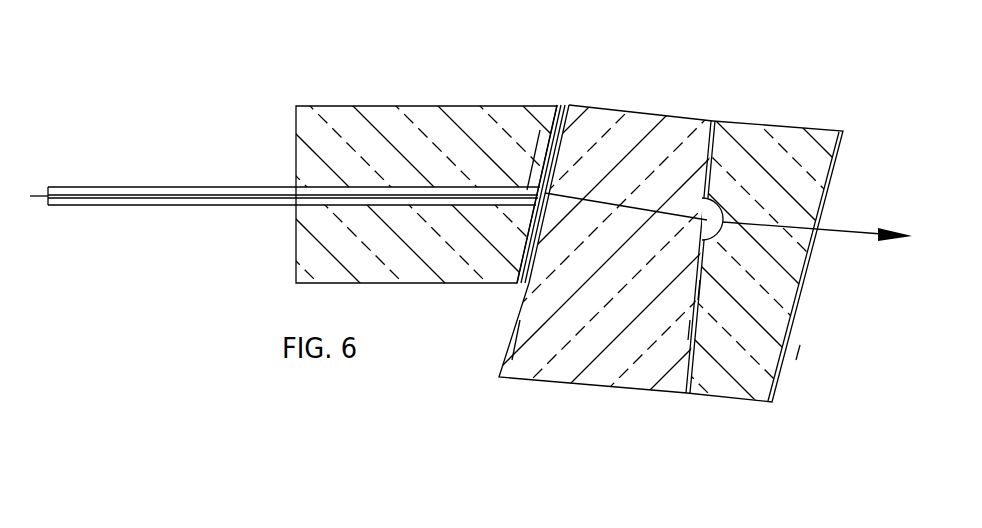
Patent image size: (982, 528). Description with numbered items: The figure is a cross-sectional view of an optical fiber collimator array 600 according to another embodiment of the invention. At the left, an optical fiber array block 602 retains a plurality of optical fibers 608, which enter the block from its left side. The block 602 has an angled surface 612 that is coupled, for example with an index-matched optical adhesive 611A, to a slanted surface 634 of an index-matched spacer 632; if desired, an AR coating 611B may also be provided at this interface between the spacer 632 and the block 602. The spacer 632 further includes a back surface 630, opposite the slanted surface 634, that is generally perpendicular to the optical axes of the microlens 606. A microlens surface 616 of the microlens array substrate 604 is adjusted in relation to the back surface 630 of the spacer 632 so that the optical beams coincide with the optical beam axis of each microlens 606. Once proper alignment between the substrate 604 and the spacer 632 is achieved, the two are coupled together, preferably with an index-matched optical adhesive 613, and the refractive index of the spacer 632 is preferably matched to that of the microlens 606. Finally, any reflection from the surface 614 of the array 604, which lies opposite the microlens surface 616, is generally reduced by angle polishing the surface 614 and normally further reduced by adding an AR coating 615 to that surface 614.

The optical fiber collimator array 600 is at (208, 118).
The optical fiber array block 602 is at (330, 105).
The microlens array substrate 604 is at (775, 122).
The microlens 606 is at (750, 197).
The optical fibers 608 is at (162, 206).
The index-matched optical adhesive 611A is at (545, 106).
The AR coating 611B is at (573, 106).
The angled surface 612 is at (532, 258).
The index-matched optical adhesive 613 is at (715, 120).
The surface 614 is at (805, 351).
The AR coating 615 is at (836, 130).
The microlens surface 616 is at (675, 340).
The back surface 630 is at (708, 295).
The index-matched spacer 632 is at (620, 104).
The slanted surface 634 is at (500, 355).